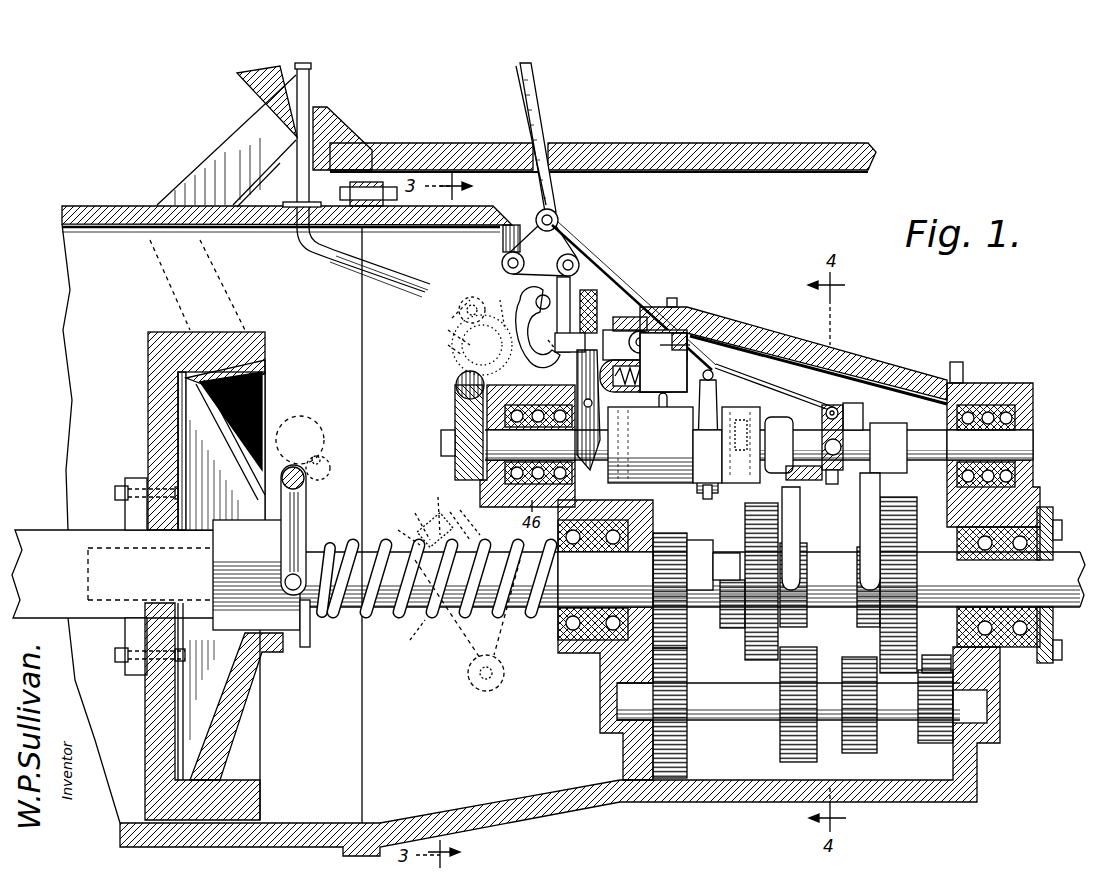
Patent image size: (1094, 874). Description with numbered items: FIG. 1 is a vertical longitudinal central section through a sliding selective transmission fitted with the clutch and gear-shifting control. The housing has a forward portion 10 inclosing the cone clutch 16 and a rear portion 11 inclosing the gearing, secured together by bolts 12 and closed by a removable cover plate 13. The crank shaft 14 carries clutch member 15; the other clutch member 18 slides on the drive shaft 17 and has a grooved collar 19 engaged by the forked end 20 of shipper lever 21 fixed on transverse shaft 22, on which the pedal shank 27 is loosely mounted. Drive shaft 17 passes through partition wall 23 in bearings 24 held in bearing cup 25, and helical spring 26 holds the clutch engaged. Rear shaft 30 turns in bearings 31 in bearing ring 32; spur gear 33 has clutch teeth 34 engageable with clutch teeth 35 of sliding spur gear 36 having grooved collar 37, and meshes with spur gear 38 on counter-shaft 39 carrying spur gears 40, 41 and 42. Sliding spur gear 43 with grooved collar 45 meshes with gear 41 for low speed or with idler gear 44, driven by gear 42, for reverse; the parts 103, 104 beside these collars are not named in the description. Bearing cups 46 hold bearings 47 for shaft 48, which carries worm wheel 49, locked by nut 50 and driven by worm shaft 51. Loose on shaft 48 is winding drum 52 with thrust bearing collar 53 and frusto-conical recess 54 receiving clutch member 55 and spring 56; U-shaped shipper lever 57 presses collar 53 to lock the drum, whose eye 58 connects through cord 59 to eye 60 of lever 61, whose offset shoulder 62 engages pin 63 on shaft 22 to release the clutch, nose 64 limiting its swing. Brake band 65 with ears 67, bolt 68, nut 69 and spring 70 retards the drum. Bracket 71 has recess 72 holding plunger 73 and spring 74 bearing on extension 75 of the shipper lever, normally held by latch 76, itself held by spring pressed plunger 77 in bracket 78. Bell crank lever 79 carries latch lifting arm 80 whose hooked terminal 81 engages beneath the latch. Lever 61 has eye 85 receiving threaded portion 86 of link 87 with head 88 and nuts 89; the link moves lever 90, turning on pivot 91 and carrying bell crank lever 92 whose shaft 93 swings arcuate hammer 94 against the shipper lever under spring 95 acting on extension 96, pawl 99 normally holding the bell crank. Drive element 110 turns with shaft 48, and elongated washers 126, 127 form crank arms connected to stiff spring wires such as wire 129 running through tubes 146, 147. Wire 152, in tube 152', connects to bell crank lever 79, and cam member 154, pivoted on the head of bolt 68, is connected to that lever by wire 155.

The forward housing portion 10 is at (105, 205).
The rear housing portion 11 is at (745, 790).
The bolts 12 is at (345, 196).
The removable cover plate 13 is at (722, 330).
The crank shaft 14 is at (38, 530).
The clutch member 15 is at (157, 435).
The cone clutch 16 is at (205, 490).
The drive shaft 17 is at (388, 612).
The clutch member 18 is at (250, 695).
The grooved collar 19 is at (300, 640).
The forked end 20 is at (283, 565).
The shipper lever 21 is at (306, 525).
The transverse shaft 22 is at (306, 475).
The partition wall 23 is at (608, 668).
The bearings 24 is at (562, 624).
The bearing cup 25 is at (585, 645).
The helical spring 26 is at (490, 544).
The pedal shank 27 is at (225, 290).
The shaft 30 is at (1062, 607).
The bearings 31 is at (1059, 533).
The bearing cup 32 is at (1000, 655).
The spur gear 33 is at (668, 533).
The clutch teeth 34 is at (720, 553).
The clutch teeth 35 is at (730, 628).
The spur gear 36 is at (748, 640).
The grooved collar 37 is at (806, 620).
The spur gear 38 is at (687, 742).
The counter-shaft 39 is at (752, 720).
The spur gear 40 is at (780, 745).
The spur gear 41 is at (850, 754).
The spur gear 42 is at (938, 740).
The spur gear 43 is at (912, 565).
The idler gear 44 is at (935, 660).
The grooved collar 45 is at (866, 622).
The bearing cups 46 is at (990, 390).
The bearings 47 is at (960, 412).
The shaft 48 is at (925, 440).
The worm wheel 49 is at (455, 407).
The nut 50 is at (441, 452).
The worm shaft 51 is at (457, 380).
The winding drum 52 is at (670, 486).
The thrust bearing collar 53 is at (665, 484).
The frusto-conical recess 54 is at (745, 420).
The clutch member 55 is at (785, 398).
The helical spring 56 is at (782, 393).
The shipper lever 57 is at (598, 418).
The eye 58 is at (669, 427).
The cord 59 is at (648, 410).
The eye 60 is at (498, 685).
The lever 61 is at (411, 644).
The offset shoulder 62 is at (329, 446).
The pin 63 is at (298, 416).
The nose 64 is at (322, 456).
The brake band 65 is at (698, 550).
The ears 67 is at (697, 445).
The bolt 68 is at (740, 419).
The nut 69 is at (710, 490).
The helical spring 70 is at (697, 470).
The bracket 71 is at (687, 346).
The cylindrical recess 72 is at (702, 413).
The plunger 73 is at (672, 335).
The spring 74 is at (634, 392).
The extension 75 is at (628, 316).
The latch 76 is at (640, 330).
The spring pressed plunger 77 is at (597, 300).
The bracket 78 is at (598, 265).
The bell crank lever 79 is at (560, 232).
The latch lifting arm 80 is at (557, 275).
The hooked terminal 81 is at (570, 342).
The eye 85 is at (401, 526).
The threaded portion 86 is at (416, 515).
The link 87 is at (448, 520).
The head 88 is at (340, 590).
The nuts 89 is at (431, 506).
The lever 90 is at (452, 356).
The pivot 91 is at (462, 318).
The bell crank lever 92 is at (472, 306).
The shaft 93 is at (538, 327).
The arcuate hammer 94 is at (547, 334).
The helical spring 95 is at (448, 345).
The extension 96 is at (448, 330).
The pawl 99 is at (496, 305).
The shifter fork 103 is at (866, 515).
The shifter fork 104 is at (798, 530).
The drive element 110 is at (852, 403).
The elongated washer 126 is at (848, 428).
The elongated washer 127 is at (833, 484).
The spring wire 129 is at (398, 284).
The tube 146 is at (297, 160).
The tube 147 is at (300, 75).
The wire 152 is at (562, 137).
The tube 152' is at (547, 135).
The cam member 154 is at (712, 385).
The wire 155 is at (690, 346).